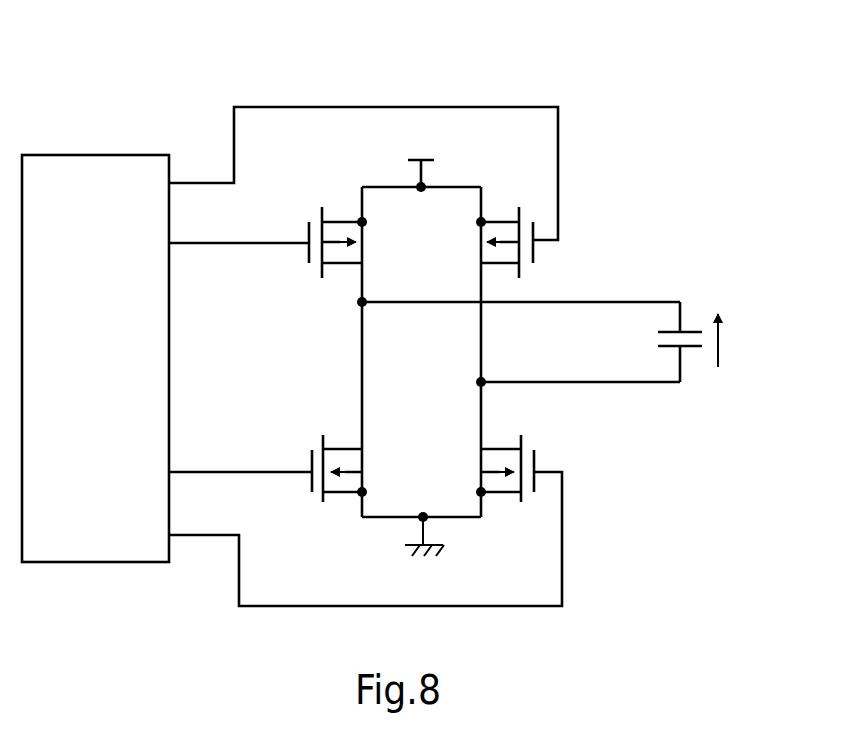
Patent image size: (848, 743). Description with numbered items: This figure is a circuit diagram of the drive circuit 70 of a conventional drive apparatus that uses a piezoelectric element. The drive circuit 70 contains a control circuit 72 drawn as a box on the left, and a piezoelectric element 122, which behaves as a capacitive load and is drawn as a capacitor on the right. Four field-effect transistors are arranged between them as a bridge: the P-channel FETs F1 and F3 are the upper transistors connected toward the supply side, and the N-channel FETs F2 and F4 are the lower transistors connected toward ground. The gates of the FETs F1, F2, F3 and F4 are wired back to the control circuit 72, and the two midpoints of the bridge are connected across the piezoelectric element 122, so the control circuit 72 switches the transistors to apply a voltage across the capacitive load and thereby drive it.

The control circuit 72 is at (97, 154).
The drive circuit 70 is at (461, 356).
The piezoelectric element 122 is at (692, 352).
The P-channel FET F1 is at (524, 214).
The N-channel FET F2 is at (531, 506).
The P-channel FET F3 is at (316, 214).
The N-channel FET F4 is at (322, 506).